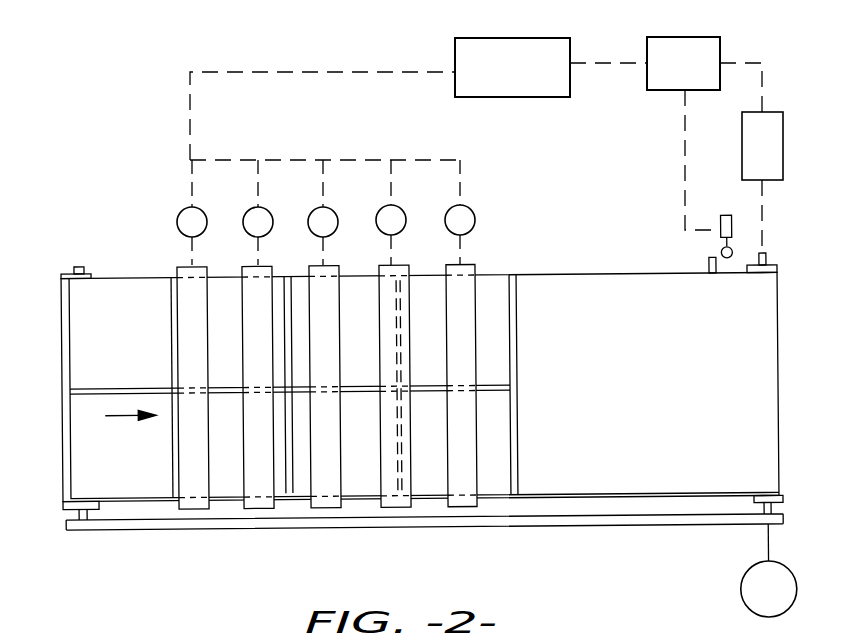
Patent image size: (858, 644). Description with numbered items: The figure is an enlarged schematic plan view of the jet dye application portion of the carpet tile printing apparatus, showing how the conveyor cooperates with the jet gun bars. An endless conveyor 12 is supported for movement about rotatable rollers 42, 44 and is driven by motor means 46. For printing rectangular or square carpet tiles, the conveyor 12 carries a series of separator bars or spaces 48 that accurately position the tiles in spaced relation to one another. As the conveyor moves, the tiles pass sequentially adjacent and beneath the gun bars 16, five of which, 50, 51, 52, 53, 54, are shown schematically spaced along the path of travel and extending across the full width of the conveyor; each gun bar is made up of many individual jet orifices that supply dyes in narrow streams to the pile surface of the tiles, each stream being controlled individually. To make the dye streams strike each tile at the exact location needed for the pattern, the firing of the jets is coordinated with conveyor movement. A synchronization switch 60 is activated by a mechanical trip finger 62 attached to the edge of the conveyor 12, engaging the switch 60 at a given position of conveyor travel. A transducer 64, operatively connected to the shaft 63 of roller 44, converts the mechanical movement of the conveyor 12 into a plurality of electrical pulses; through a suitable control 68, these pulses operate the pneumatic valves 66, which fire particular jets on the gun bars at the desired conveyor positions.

The endless conveyor 12 is at (131, 295).
The gun bars 16 is at (268, 543).
The rotatable roller 42 is at (63, 507).
The rotatable roller 44 is at (770, 266).
The motor means 46 is at (741, 582).
The separator bars 48 is at (513, 331).
The gun bar 50 is at (197, 478).
The gun bar 51 is at (259, 355).
The gun bar 52 is at (335, 470).
The gun bar 53 is at (388, 335).
The gun bar 54 is at (462, 458).
The synchronization switch 60 is at (726, 218).
The mechanical trip finger 62 is at (710, 262).
The shaft 63 is at (765, 215).
The transducer 64 is at (757, 161).
The pneumatic valves 66 is at (244, 217).
The control 68 is at (456, 78).